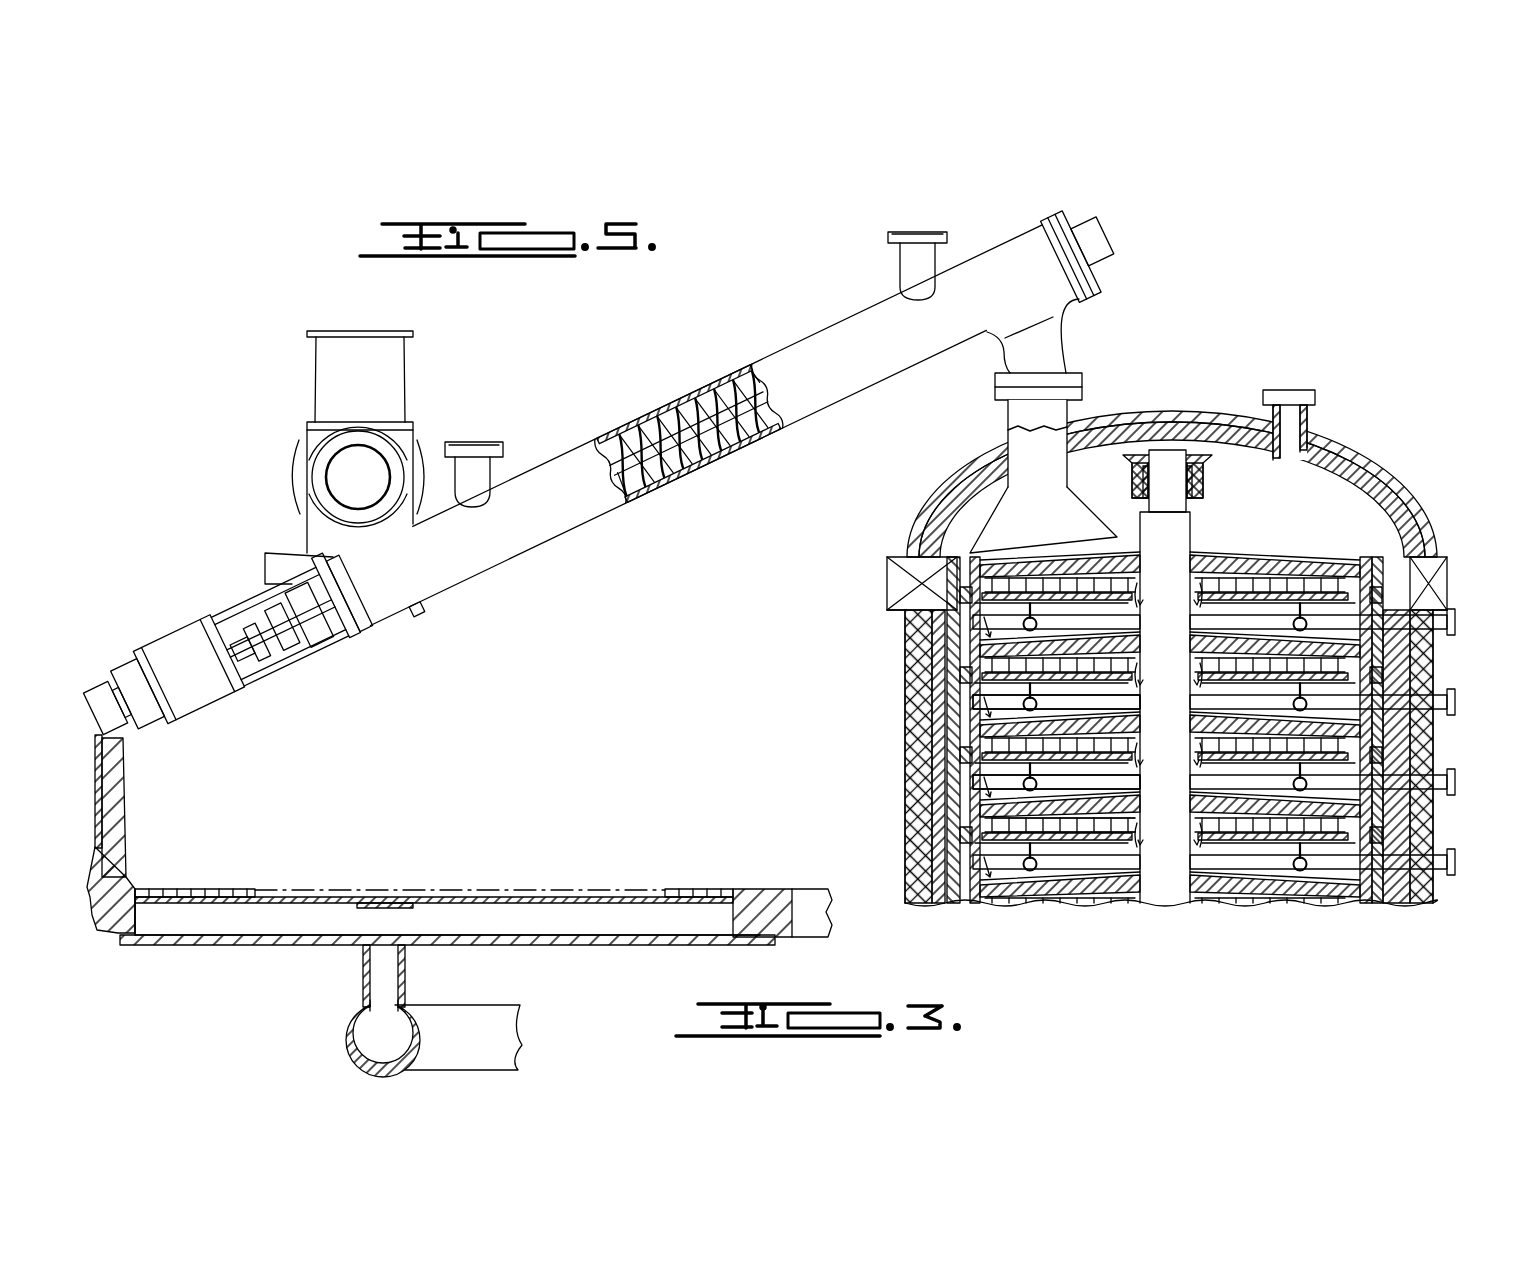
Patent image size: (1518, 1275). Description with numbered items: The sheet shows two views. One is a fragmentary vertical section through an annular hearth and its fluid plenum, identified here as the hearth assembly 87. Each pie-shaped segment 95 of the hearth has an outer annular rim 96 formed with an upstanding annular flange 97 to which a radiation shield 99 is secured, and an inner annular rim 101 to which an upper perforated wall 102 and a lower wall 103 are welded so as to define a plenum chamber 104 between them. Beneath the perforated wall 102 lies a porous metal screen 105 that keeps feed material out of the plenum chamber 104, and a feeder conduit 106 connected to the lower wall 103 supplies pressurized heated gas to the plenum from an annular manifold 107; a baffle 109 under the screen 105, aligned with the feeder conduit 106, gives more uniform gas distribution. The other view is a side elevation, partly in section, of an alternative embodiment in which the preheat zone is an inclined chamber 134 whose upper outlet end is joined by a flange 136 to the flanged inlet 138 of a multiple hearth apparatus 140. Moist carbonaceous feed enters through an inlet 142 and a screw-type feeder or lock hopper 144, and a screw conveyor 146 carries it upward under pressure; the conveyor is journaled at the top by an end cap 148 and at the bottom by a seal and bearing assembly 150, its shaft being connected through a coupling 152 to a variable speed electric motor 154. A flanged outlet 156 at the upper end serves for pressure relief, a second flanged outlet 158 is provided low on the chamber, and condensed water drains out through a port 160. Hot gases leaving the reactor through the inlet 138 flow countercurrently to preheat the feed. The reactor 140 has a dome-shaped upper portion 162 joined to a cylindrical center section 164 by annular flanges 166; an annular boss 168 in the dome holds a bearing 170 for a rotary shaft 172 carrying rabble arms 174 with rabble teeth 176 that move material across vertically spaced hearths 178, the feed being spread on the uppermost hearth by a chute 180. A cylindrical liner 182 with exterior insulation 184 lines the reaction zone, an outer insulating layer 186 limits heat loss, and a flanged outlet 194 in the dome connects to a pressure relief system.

In FIG. 3, the tray assembly 87 is at (189, 955).
In FIG. 3, the pie-shaped segment 95 is at (776, 943).
In FIG. 3, the outer annular rim 96 is at (108, 901).
In FIG. 3, the upstanding annular flange 97 is at (114, 806).
In FIG. 3, the radiation shield 99 is at (103, 778).
In FIG. 3, the inner annular rim 101 is at (753, 892).
In FIG. 3, the upper perforated wall 102 is at (676, 889).
In FIG. 3, the lower wall 103 is at (478, 946).
In FIG. 3, the plenum chamber 104 is at (592, 921).
In FIG. 3, the porous metal screen 105 is at (456, 906).
In FIG. 3, the feeder conduit 106 is at (364, 979).
In FIG. 3, the annular manifold 107 is at (506, 1026).
In FIG. 3, the baffle 109 is at (380, 906).
In FIG. 5, the inclined chamber 134 is at (490, 587).
In FIG. 5, the flange 136 is at (1083, 386).
In FIG. 5, the flanged inlet 138 is at (1007, 402).
In FIG. 5, the multiple hearth apparatus 140 is at (897, 648).
In FIG. 5, the inlet 142 is at (352, 333).
In FIG. 5, the screw-type feeder or lock hopper 144 is at (346, 478).
In FIG. 5, the screw conveyor 146 is at (696, 454).
In FIG. 5, the end cap 148 is at (1090, 274).
In FIG. 5, the seal and bearing assembly 150 is at (326, 643).
In FIG. 5, the coupling 152 is at (266, 654).
In FIG. 5, the variable speed electric motor 154 is at (186, 708).
In FIG. 5, the flanged outlet 156 is at (890, 240).
In FIG. 5, the second flanged outlet 158 is at (480, 444).
In FIG. 5, the port 160 is at (421, 609).
In FIG. 5, the dome-shaped upper portion 162 is at (960, 472).
In FIG. 5, the circular cylindrical center section 164 is at (908, 593).
In FIG. 5, the annular flanges 166 is at (908, 576).
In FIG. 5, the annular boss 168 is at (1203, 473).
In FIG. 5, the bearing 170 is at (1193, 495).
In FIG. 5, the rotary shaft 172 is at (1181, 508).
In FIG. 5, the rabble arms 174 is at (1278, 570).
In FIG. 5, the rabble teeth 176 is at (1018, 822).
In FIG. 5, the hearths 178 is at (950, 685).
In FIG. 5, the chute 180 is at (1040, 528).
In FIG. 5, the cylindrical liner 182 is at (955, 770).
In FIG. 5, the insulation 184 is at (955, 731).
In FIG. 5, the insulating layer 186 is at (921, 787).
In FIG. 5, the flanged outlet 194 is at (1300, 421).